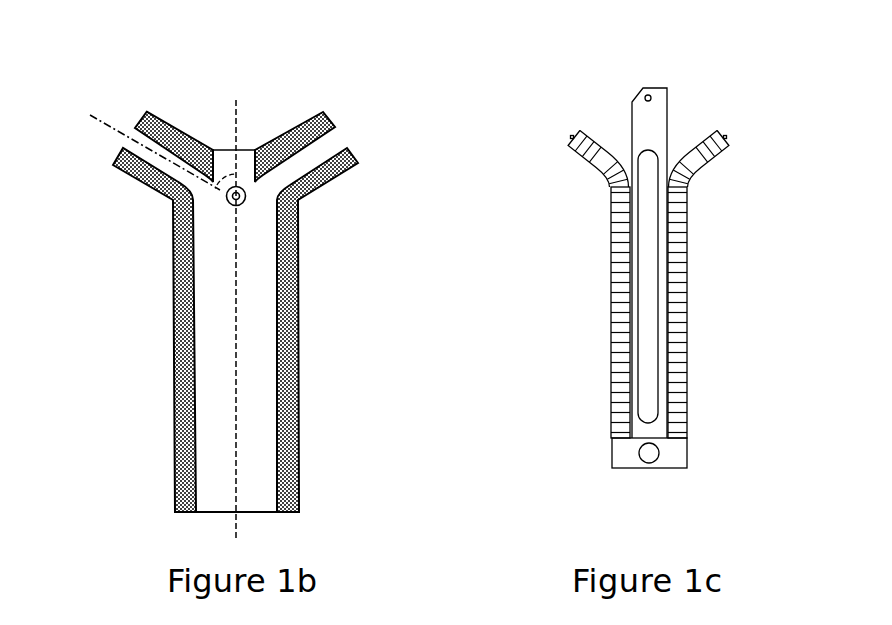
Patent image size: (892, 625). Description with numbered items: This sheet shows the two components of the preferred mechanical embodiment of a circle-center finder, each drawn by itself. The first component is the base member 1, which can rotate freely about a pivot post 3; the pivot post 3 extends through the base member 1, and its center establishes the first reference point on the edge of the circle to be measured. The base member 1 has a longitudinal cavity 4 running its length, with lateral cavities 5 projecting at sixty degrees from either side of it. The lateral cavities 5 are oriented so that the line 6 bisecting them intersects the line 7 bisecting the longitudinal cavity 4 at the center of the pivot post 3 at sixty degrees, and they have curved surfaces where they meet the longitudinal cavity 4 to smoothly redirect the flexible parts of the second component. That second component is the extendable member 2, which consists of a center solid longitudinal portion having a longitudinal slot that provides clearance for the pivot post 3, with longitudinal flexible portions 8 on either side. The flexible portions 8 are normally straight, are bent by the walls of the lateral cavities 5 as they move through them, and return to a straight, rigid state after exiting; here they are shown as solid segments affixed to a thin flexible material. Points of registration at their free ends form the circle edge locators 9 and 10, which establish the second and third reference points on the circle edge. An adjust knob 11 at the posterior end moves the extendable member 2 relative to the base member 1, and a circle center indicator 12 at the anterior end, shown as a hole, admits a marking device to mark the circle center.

In FIG. 1B, the base member 1 is at (310, 318).
In FIG. 1C, the extendable member 2 is at (703, 309).
In FIG. 1B, the pivot post 3 is at (260, 201).
In FIG. 1B, the longitudinal cavity 4 is at (222, 121).
In FIG. 1B, the lateral cavities 5 is at (106, 135).
In FIG. 1B, the line bisecting the lateral cavities 6 is at (110, 106).
In FIG. 1B, the line bisecting the longitudinal cavity 7 is at (251, 108).
In FIG. 1C, the flexible portions 8 is at (707, 184).
In FIG. 1C, the circle edge locator 9 is at (747, 139).
In FIG. 1C, the circle edge locator 10 is at (548, 145).
In FIG. 1C, the adjust knob 11 is at (674, 451).
In FIG. 1C, the circle center indicator 12 is at (667, 100).